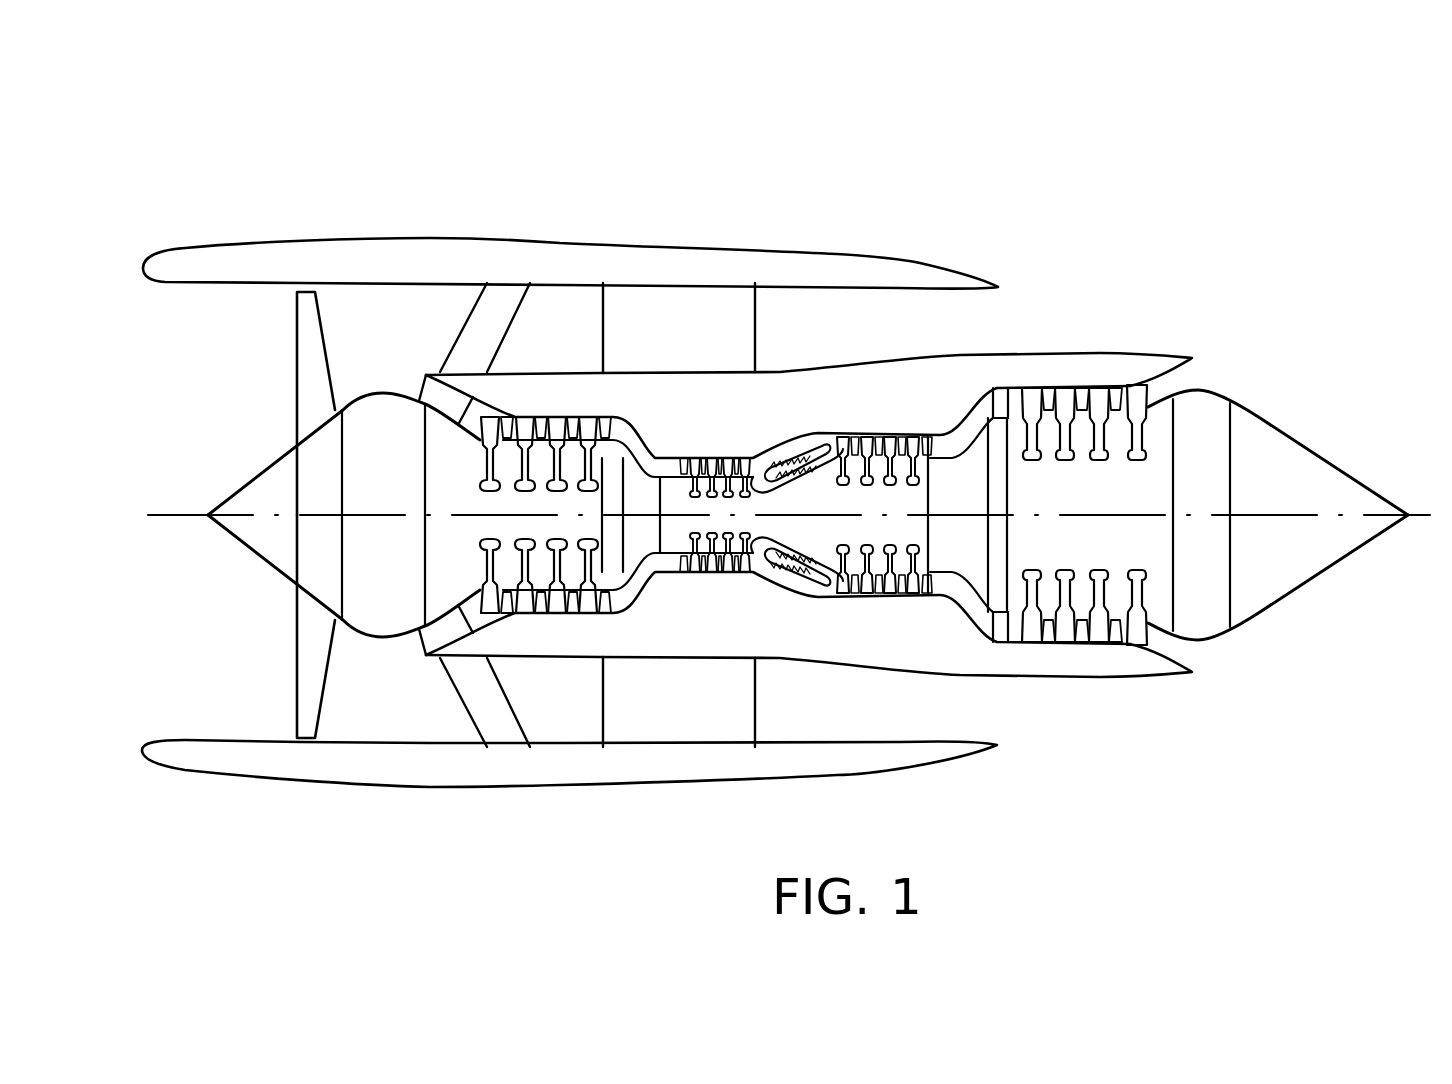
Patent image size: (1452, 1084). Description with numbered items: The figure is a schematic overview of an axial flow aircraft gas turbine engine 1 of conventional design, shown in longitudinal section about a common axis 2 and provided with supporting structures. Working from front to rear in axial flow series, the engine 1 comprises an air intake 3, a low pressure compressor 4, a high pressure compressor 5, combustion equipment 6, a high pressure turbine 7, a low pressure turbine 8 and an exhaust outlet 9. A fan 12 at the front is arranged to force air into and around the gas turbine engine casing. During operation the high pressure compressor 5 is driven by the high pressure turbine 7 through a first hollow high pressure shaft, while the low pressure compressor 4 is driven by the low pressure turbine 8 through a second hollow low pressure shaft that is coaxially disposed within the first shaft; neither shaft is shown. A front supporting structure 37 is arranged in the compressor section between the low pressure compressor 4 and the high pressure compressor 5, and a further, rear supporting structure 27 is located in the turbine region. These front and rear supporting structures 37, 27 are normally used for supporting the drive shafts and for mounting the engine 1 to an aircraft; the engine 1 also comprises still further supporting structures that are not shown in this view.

The axial flow aircraft gas turbine engine 1 is at (1302, 130).
The common axis 2 is at (167, 513).
The air intake 3 is at (228, 335).
The fan 12 is at (315, 357).
The low pressure compressor 4 is at (562, 415).
The supporting structure 37 is at (640, 447).
The high pressure compressor 5 is at (727, 462).
The combustion equipment 6 is at (797, 435).
The high pressure turbine 7 is at (920, 440).
The further supporting structure 27 is at (1005, 397).
The low pressure turbine 8 is at (1137, 393).
The exhaust outlet 9 is at (1203, 372).